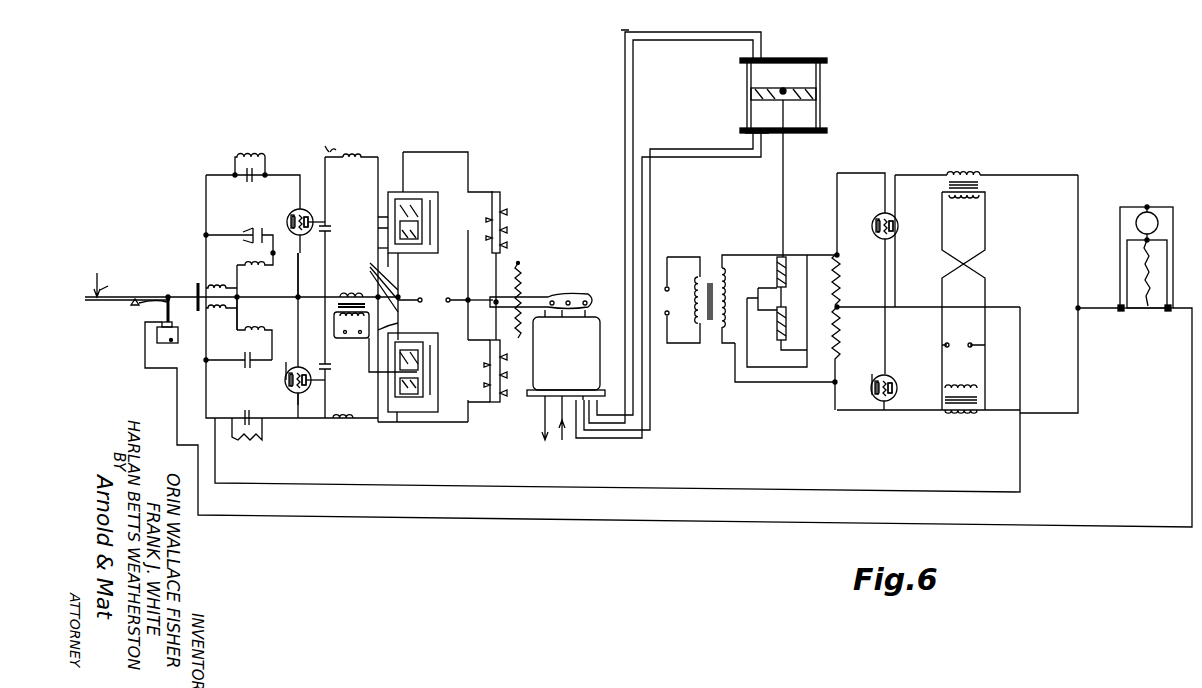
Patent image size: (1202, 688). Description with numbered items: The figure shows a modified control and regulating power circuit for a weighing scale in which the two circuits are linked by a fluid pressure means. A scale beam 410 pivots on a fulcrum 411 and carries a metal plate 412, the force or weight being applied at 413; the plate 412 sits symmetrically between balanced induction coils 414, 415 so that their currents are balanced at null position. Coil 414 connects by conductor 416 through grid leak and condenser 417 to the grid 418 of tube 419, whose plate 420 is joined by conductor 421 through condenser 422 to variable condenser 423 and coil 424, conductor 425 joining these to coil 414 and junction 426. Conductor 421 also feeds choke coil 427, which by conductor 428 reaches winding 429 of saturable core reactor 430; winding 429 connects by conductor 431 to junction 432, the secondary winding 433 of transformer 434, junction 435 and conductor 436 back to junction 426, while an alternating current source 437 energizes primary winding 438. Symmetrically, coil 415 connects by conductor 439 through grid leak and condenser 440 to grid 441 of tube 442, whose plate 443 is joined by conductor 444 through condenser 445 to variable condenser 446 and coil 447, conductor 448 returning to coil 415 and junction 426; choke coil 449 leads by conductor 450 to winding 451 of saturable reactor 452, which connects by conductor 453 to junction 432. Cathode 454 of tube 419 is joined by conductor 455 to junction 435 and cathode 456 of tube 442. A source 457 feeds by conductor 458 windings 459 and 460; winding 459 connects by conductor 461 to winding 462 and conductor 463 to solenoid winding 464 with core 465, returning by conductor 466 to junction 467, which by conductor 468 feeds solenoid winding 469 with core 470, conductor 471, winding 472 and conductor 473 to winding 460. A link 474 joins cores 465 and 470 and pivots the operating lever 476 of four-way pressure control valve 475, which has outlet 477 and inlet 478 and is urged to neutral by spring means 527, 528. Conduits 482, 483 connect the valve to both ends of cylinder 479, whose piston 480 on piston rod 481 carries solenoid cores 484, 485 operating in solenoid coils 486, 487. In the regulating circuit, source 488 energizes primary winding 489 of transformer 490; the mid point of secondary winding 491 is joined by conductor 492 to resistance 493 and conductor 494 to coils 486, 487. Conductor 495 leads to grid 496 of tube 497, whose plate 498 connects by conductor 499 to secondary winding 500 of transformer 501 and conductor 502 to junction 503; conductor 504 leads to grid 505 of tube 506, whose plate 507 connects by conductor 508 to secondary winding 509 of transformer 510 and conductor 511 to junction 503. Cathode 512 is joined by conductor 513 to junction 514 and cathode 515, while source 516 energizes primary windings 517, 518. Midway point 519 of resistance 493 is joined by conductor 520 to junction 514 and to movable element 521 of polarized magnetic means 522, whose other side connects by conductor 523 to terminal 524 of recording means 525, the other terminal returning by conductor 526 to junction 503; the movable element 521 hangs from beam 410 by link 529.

The scale beam 410 is at (103, 284).
The fulcrum 411 is at (128, 303).
The metal plate 412 is at (178, 298).
The force or weight application point 413 is at (115, 272).
The induction coil 414 is at (222, 319).
The induction coil 415 is at (222, 276).
The conductor 416 is at (206, 389).
The grid leak and condenser 417 is at (248, 439).
The grid 418 is at (289, 390).
The tube 419 is at (298, 406).
The plate 420 is at (315, 382).
The conductor 421 is at (324, 422).
The condenser 422 is at (328, 370).
The variable condenser 423 is at (248, 364).
The coil 424 is at (260, 333).
The conductor 425 is at (228, 359).
The junction 426 is at (246, 300).
The choke coil 427 is at (335, 434).
The conductor 428 is at (355, 422).
The winding 429 is at (388, 371).
The saturable core reactor 430 is at (417, 373).
The conductor 431 is at (407, 324).
The junction 432 is at (394, 302).
The secondary winding 433 is at (355, 284).
The transformer 434 is at (329, 313).
The junction 435 is at (313, 310).
The conductor 436 is at (278, 292).
The alternating current source 437 is at (355, 343).
The primary winding 438 is at (333, 325).
The conductor 439 is at (205, 198).
The grid leak and condenser 440 is at (245, 154).
The grid 441 is at (292, 212).
The tube 442 is at (294, 182).
The plate 443 is at (313, 217).
The conductor 444 is at (326, 156).
The condenser 445 is at (328, 226).
The variable condenser 446 is at (247, 237).
The coil 447 is at (242, 265).
The conductor 448 is at (209, 238).
The choke coil 449 is at (352, 155).
The conductor 450 is at (375, 157).
The winding 451 is at (377, 228).
The saturable reactor 452 is at (425, 219).
The conductor 453 is at (375, 251).
The cathode 454 is at (285, 383).
The conductor 455 is at (289, 368).
The cathode 456 is at (289, 220).
The alternating current source 457 is at (436, 299).
The conductor 458 is at (367, 282).
The winding 459 is at (425, 349).
The winding 460 is at (410, 253).
The conductor 461 is at (433, 368).
The winding 462 is at (417, 415).
The conductor 463 is at (450, 422).
The solenoid winding 464 is at (485, 379).
The core 465 is at (533, 369).
The conductor 466 is at (470, 303).
The junction 467 is at (460, 290).
The conductor 468 is at (452, 264).
The solenoid winding 469 is at (503, 206).
The core 470 is at (501, 196).
The conductor 471 is at (455, 152).
The winding 472 is at (410, 192).
The conductor 473 is at (437, 197).
The link 474 is at (498, 274).
The four-way pressure control valve 475 is at (591, 310).
The valve operating lever 476 is at (535, 303).
The fluid outlet 477 is at (543, 414).
The fluid inlet 478 is at (543, 422).
The cylinder 479 is at (820, 108).
The piston 480 is at (805, 92).
The piston rod 481 is at (783, 187).
The conduit 482 is at (644, 215).
The conduit 483 is at (625, 139).
The solenoid core 484 is at (777, 257).
The solenoid core 485 is at (784, 343).
The solenoid coil 486 is at (787, 257).
The solenoid coil 487 is at (785, 340).
The alternating current source 488 is at (667, 326).
The primary winding 489 is at (698, 330).
The transformer 490 is at (711, 254).
The secondary winding 491 is at (722, 333).
The conductor 492 is at (752, 382).
The resistance 493 is at (838, 331).
The conductor 494 is at (797, 382).
The conductor 495 is at (850, 411).
The grid 496 is at (889, 382).
The tube 497 is at (887, 363).
The plate 498 is at (893, 388).
The conductor 499 is at (916, 411).
The secondary winding 500 is at (965, 417).
The transformer 501 is at (984, 399).
The conductor 502 is at (1078, 400).
The junction 503 is at (1072, 306).
The conductor 504 is at (863, 168).
The grid 505 is at (878, 218).
The tube 506 is at (899, 220).
The plate 507 is at (896, 229).
The conductor 508 is at (930, 170).
The secondary winding 509 is at (966, 172).
The transformer 510 is at (998, 194).
The conductor 511 is at (1047, 175).
The cathode 512 is at (872, 392).
The conductor 513 is at (883, 337).
The junction 514 is at (880, 295).
The cathode 515 is at (873, 226).
The alternating current source 516 is at (961, 336).
The primary winding 517 is at (958, 383).
The primary winding 518 is at (963, 249).
The midway point 519 is at (840, 300).
The conductor 520 is at (732, 497).
The movable element 521 is at (160, 325).
The polarized magnetic means 522 is at (165, 348).
The conductor 523 is at (145, 343).
The terminal 524 is at (1168, 311).
The recording means 525 is at (1156, 198).
The conductor 526 is at (1107, 309).
The spring means 527 is at (532, 323).
The spring means 528 is at (523, 274).
The link 529 is at (147, 291).